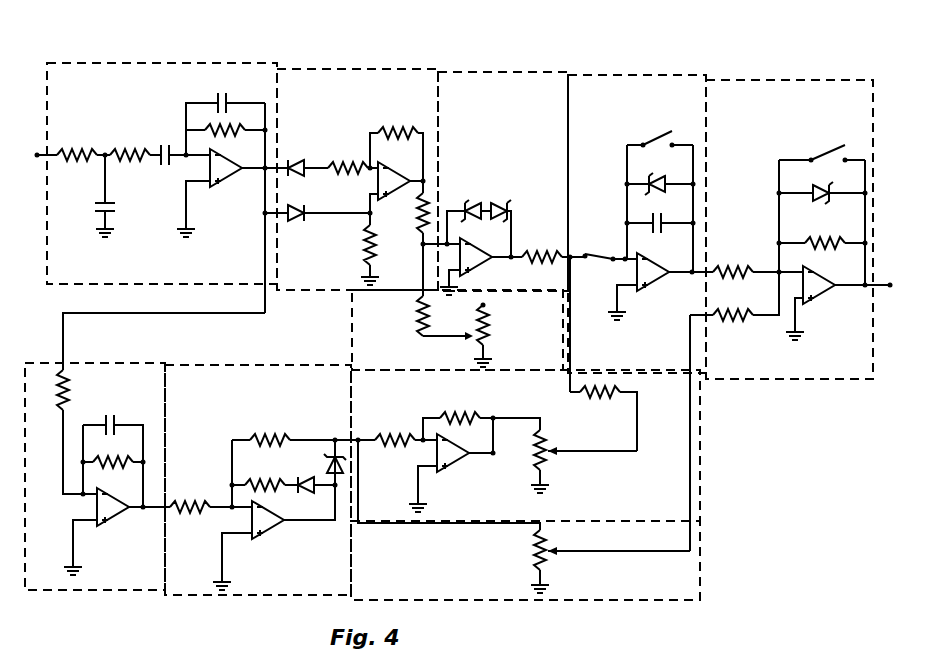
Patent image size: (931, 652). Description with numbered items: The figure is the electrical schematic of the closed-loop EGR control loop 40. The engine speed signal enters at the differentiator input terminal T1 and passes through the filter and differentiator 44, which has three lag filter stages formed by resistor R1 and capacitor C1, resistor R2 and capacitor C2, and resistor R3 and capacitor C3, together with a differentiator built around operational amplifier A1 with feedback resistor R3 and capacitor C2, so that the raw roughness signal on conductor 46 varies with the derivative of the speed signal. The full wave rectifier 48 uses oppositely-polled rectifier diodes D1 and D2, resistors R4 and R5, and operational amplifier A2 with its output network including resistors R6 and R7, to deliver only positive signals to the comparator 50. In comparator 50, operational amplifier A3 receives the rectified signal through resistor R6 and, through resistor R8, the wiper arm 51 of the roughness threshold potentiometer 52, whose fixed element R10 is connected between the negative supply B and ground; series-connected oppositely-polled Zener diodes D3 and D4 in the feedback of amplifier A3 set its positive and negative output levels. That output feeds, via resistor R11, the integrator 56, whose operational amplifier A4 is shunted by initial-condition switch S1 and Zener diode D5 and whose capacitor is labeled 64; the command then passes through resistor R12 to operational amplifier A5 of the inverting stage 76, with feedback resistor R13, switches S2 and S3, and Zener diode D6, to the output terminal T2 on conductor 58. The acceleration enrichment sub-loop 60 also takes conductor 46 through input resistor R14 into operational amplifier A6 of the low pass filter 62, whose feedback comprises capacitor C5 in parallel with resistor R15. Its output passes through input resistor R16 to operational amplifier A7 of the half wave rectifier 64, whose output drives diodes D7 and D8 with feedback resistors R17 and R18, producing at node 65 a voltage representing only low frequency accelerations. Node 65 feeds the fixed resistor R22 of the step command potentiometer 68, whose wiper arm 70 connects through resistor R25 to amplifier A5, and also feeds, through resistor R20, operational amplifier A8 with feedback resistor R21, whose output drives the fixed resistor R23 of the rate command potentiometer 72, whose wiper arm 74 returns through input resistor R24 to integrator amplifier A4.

The EGR control loop 40 is at (85, 62).
The filter and differentiator 44 is at (132, 82).
The conductor 46 is at (170, 313).
The full wave rectifier 48 is at (350, 82).
The comparator 50 is at (487, 97).
The wiper arm 51 is at (447, 338).
The roughness threshold potentiometer 52 is at (352, 348).
The integrator 56 is at (648, 92).
The conductor 58 is at (872, 290).
The acceleration enrichment sub-loop 60 is at (718, 518).
The low pass filter 62 is at (113, 588).
The half wave rectifier 64 is at (188, 590).
The node 65 is at (337, 440).
The step command potentiometer 68 is at (690, 578).
The wiper arm 70 is at (598, 553).
The rate command potentiometer 72 is at (700, 442).
The wiper arm 74 is at (585, 455).
The inverting stage 76 is at (798, 92).
The differentiator input terminal T1 is at (36, 152).
The output terminal T2 is at (890, 304).
The negative supply B is at (486, 305).
The resistor R1 is at (80, 150).
The resistor R2 is at (133, 150).
The feedback resistor R3 is at (237, 128).
The resistor R4 is at (345, 162).
The resistor R5 is at (364, 240).
The resistor R6 is at (393, 128).
The resistor R7 is at (417, 236).
The resistor R8 is at (418, 305).
The fixed element R10 is at (496, 330).
The resistor R11 is at (542, 250).
The resistor R12 is at (735, 265).
The resistor R13 is at (815, 240).
The input resistor R14 is at (57, 402).
The resistor R15 is at (110, 468).
The input resistor R16 is at (190, 500).
The resistor R17 is at (262, 480).
The resistor R18 is at (255, 437).
The resistor R20 is at (390, 436).
The feedback resistor R21 is at (452, 414).
The fixed resistor R22 is at (530, 548).
The fixed resistor R23 is at (545, 430).
The input resistor R24 is at (593, 398).
The resistor R25 is at (733, 325).
The capacitor C1 is at (90, 208).
The capacitor C2 is at (164, 165).
The capacitor C3 is at (218, 100).
The capacitor C5 is at (113, 420).
The operational amplifier A1 is at (236, 186).
The operational amplifier A2 is at (397, 199).
The operational amplifier A3 is at (490, 262).
The operational amplifier A4 is at (660, 290).
The operational amplifier A5 is at (823, 305).
The operational amplifier A6 is at (117, 517).
The operational amplifier A7 is at (275, 540).
The operational amplifier A8 is at (462, 470).
The rectifier diode D1 is at (300, 160).
The rectifier diode D2 is at (296, 222).
The Zener diode D3 is at (472, 200).
The Zener diode D4 is at (497, 200).
The Zener diode D5 is at (645, 178).
The Zener diode D6 is at (810, 188).
The diode D7 is at (304, 495).
The diode D8 is at (328, 458).
The initial-condition switch S1 is at (598, 252).
The initial condition switch S2 is at (660, 133).
The initial condition switch S3 is at (835, 145).